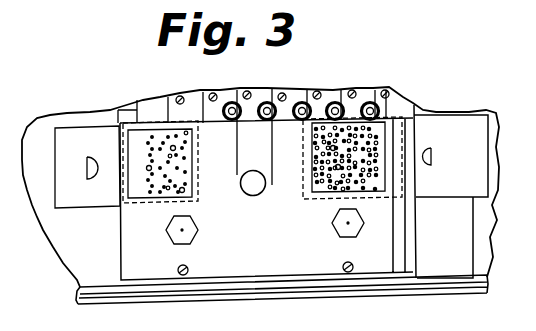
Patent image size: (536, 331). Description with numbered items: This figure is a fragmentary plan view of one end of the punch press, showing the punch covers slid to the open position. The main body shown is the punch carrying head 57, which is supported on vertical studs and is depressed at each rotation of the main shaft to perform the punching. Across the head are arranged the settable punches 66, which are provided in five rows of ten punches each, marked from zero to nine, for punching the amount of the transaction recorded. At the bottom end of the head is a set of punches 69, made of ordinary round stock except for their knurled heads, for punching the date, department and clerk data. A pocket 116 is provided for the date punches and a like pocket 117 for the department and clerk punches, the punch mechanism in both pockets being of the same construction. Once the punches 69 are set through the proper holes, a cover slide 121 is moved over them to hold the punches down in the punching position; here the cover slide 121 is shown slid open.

The cover slide 121 is at (53, 133).
The punch carrying head 57 is at (122, 266).
The settable punches 66 is at (372, 101).
The pocket 116 is at (147, 197).
The pocket 117 is at (333, 193).
The punches 69 is at (181, 193).